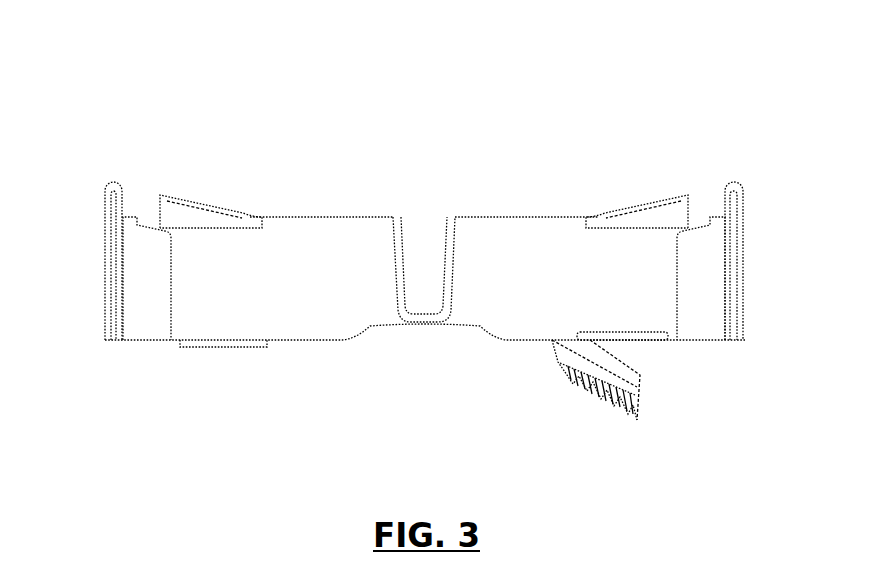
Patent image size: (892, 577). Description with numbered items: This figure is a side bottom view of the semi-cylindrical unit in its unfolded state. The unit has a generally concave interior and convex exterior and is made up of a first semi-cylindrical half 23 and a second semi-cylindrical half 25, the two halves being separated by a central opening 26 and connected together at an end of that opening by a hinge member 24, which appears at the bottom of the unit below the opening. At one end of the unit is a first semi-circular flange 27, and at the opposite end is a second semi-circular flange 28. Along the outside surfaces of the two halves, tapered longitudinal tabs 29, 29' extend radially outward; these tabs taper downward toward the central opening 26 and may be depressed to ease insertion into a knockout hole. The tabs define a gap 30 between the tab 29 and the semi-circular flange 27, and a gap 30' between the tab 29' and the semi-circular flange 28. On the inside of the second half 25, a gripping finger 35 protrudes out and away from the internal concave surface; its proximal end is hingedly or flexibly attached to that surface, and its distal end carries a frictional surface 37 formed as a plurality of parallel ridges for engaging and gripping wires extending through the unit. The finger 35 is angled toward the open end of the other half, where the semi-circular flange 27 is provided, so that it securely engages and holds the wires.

The first semi-cylindrical half 23 is at (310, 245).
The hinge member 24 is at (421, 325).
The second semi-cylindrical half 25 is at (496, 252).
The central opening 26 is at (426, 252).
The first semi-circular flange 27 is at (122, 258).
The second semi-circular flange 28 is at (738, 192).
The tapered longitudinal tab 29 is at (211, 145).
The tapered longitudinal tab 29' is at (637, 142).
The gap 30 is at (131, 183).
The gap 30' is at (701, 208).
The gripping finger 35 is at (624, 374).
The frictional surface 37 is at (592, 402).